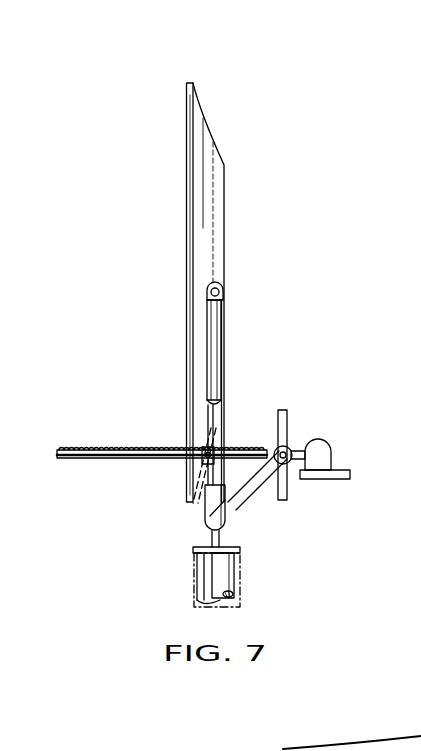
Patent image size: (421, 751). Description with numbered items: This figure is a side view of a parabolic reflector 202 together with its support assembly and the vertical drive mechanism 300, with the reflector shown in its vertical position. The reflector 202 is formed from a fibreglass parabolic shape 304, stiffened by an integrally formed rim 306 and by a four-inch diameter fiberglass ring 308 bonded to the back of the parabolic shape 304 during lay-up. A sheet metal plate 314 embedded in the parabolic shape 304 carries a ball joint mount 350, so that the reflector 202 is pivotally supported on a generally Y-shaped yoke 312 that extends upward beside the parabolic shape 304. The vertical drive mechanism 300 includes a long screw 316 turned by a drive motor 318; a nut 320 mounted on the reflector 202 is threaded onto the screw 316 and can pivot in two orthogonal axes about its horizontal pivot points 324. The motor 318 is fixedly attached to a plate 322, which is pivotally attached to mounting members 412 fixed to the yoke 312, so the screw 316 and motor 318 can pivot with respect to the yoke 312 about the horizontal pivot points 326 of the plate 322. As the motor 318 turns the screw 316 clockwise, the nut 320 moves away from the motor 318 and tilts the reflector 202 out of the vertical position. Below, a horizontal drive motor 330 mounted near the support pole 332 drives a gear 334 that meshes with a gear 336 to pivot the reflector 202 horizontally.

The parabolic reflector 202 is at (209, 107).
The vertical drive mechanism 300 is at (272, 388).
The parabolic shape 304 is at (228, 284).
The rim 306 is at (189, 83).
The ring 308 is at (226, 165).
The yoke 312 is at (214, 345).
The plate 314 is at (197, 275).
The screw 316 is at (143, 458).
The drive motor 318 is at (322, 448).
The nut 320 is at (215, 450).
The plate 322 is at (284, 411).
The horizontal pivot points 324 is at (200, 496).
The horizontal pivot points 326 is at (300, 479).
The horizontal drive motor 330 is at (245, 601).
The support pole 332 is at (198, 572).
The gear 334 is at (236, 563).
The gear 336 is at (240, 549).
The ball joint mount 350 is at (232, 293).
The mounting members 412 is at (246, 495).